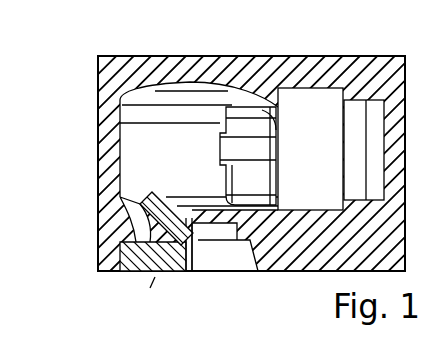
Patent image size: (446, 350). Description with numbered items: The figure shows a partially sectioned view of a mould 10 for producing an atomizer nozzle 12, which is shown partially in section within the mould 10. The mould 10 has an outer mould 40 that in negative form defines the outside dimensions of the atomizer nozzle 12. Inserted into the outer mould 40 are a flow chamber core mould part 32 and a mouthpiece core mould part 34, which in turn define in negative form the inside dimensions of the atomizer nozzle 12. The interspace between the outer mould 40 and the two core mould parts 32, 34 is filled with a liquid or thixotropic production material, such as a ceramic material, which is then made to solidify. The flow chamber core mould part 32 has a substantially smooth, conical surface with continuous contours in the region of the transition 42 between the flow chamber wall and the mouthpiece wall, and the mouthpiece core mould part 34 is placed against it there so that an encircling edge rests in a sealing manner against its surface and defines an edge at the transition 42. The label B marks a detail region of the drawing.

The mould 10 is at (338, 52).
The atomizer nozzle 12 is at (138, 147).
The flow chamber core mould part 32 is at (353, 108).
The mouthpiece core mould part 34 is at (120, 244).
The outer mould 40 is at (265, 78).
The transition 42 is at (128, 206).
The flow direction B is at (151, 297).